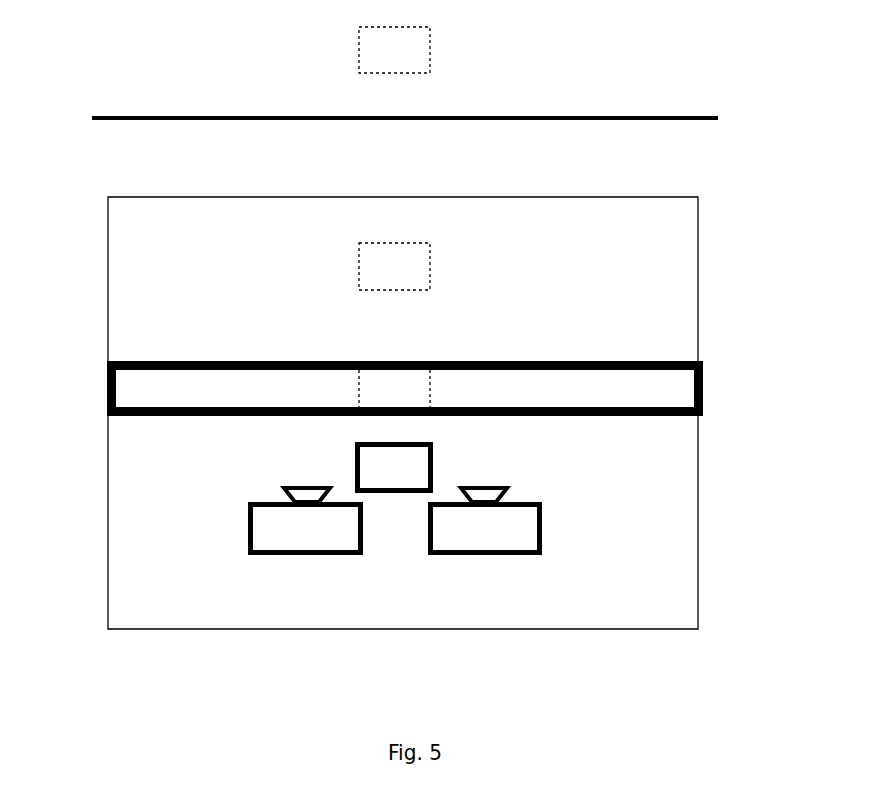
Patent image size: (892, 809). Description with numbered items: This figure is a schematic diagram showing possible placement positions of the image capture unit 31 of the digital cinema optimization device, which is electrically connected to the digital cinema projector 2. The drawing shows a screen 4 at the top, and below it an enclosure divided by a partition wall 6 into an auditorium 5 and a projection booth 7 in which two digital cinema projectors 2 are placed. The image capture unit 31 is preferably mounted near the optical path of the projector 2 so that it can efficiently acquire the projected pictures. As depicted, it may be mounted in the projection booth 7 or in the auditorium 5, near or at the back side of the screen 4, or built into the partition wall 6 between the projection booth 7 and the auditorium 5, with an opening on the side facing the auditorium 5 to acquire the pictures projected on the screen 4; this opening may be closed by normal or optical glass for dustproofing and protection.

The screen 4 is at (718, 118).
The auditorium 5 is at (700, 283).
The partition wall 6 is at (705, 385).
The projection booth 7 is at (700, 520).
The image capture unit 31 is at (403, 493).
The digital cinema projector 2 is at (502, 555).